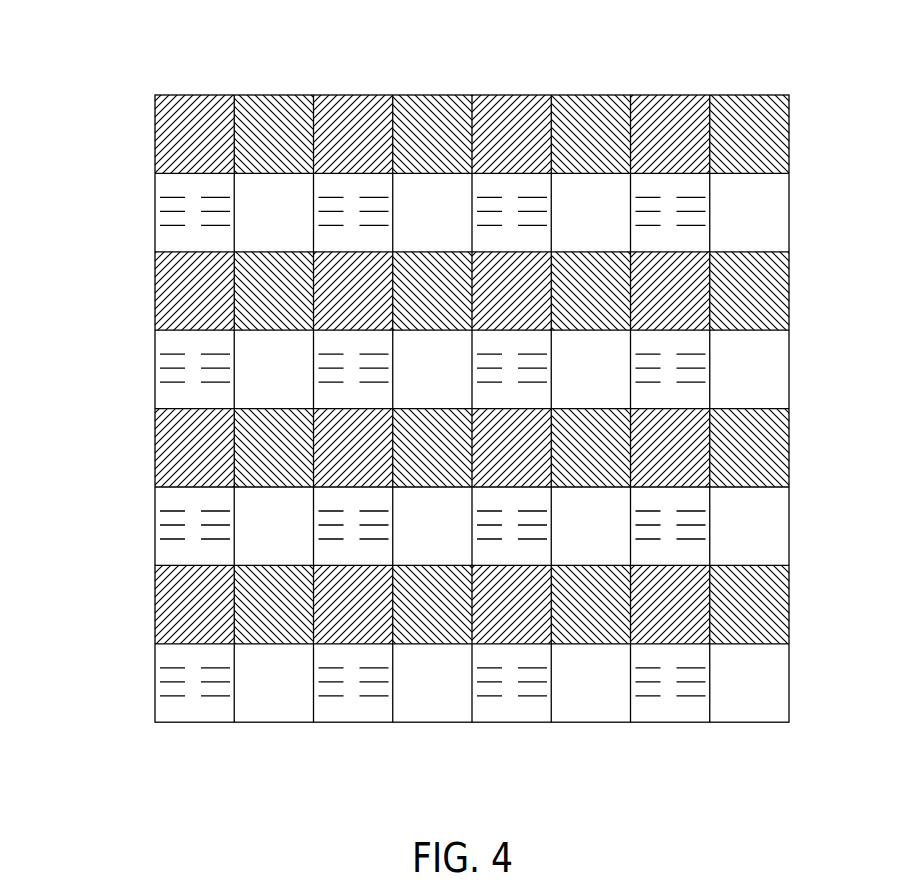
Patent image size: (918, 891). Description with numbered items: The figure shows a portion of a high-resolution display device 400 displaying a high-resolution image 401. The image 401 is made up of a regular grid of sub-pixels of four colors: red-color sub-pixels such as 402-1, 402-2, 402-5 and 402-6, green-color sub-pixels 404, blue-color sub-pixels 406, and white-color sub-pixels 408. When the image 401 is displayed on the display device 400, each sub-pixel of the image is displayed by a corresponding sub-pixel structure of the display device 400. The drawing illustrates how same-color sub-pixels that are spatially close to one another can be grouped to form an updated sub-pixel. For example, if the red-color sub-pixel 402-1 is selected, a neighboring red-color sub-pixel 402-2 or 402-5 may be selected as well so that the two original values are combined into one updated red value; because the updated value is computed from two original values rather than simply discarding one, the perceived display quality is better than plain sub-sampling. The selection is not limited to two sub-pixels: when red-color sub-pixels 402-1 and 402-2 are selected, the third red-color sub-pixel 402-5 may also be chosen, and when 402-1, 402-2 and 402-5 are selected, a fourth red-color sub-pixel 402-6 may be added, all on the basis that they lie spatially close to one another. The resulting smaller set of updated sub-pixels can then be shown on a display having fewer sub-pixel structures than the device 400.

The high-resolution display device 400 is at (488, 33).
The high-resolution image 401 is at (548, 95).
The red-color sub-pixel 402-1 is at (188, 95).
The red-color sub-pixel 402-2 is at (350, 95).
The red-color sub-pixel 402-5 is at (155, 296).
The red-color sub-pixel 402-6 is at (314, 310).
The green-color sub-pixel 404 is at (270, 95).
The blue-color sub-pixel 406 is at (155, 216).
The white-color sub-pixel 408 is at (289, 201).